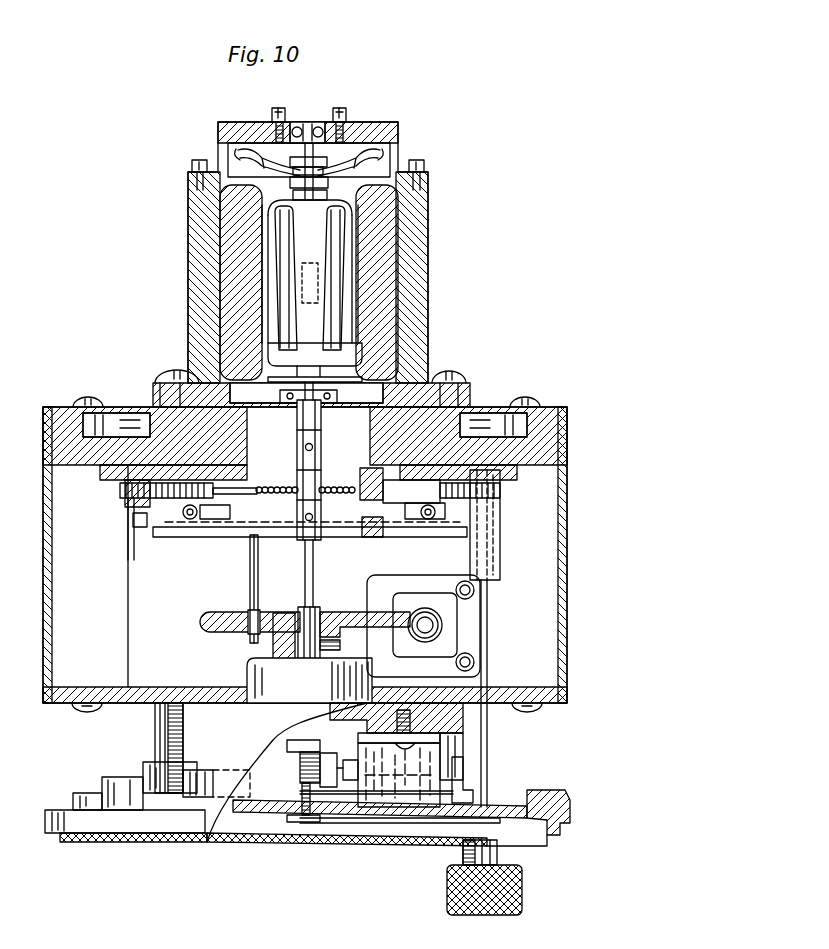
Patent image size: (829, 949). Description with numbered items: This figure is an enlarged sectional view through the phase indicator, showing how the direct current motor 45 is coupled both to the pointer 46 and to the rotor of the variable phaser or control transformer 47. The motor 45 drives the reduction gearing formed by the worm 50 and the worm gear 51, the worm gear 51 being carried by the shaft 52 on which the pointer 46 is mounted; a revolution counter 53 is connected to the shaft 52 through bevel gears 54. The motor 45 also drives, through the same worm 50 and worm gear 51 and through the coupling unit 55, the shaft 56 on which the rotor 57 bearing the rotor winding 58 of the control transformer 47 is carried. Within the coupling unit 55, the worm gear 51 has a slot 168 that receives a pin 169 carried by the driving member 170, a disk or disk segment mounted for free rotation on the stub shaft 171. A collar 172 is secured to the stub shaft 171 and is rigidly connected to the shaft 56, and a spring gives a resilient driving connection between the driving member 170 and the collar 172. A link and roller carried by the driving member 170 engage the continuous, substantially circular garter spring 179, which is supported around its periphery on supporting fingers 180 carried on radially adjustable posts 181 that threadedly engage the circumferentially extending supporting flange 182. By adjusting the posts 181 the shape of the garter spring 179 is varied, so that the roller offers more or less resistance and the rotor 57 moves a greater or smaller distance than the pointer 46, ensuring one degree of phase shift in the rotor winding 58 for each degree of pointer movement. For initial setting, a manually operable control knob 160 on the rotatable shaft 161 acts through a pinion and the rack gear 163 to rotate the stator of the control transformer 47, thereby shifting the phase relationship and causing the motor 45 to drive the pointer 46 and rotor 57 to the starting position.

The direct current motor 45 is at (455, 632).
The pointer 46 is at (400, 818).
The control transformer 47 is at (436, 243).
The worm 50 is at (426, 608).
The worm gear 51 is at (345, 603).
The shaft 52 is at (312, 610).
The revolution counter 53 is at (430, 753).
The bevel gears 54 is at (300, 783).
The coupling unit 55 is at (541, 552).
The shaft 56 is at (297, 428).
The rotor 57 is at (272, 305).
The rotor winding 58 is at (333, 300).
The control knob 160 is at (520, 893).
The rotatable shaft 161 is at (489, 603).
The rack gear 163 is at (96, 404).
The slot 168 is at (270, 615).
The pin 169 is at (250, 578).
The driving member 170 is at (186, 548).
The stub shaft 171 is at (305, 545).
The collar 172 is at (313, 487).
The garter spring 179 is at (186, 520).
The supporting fingers 180 is at (218, 532).
The posts 181 is at (120, 492).
The supporting flange 182 is at (130, 511).